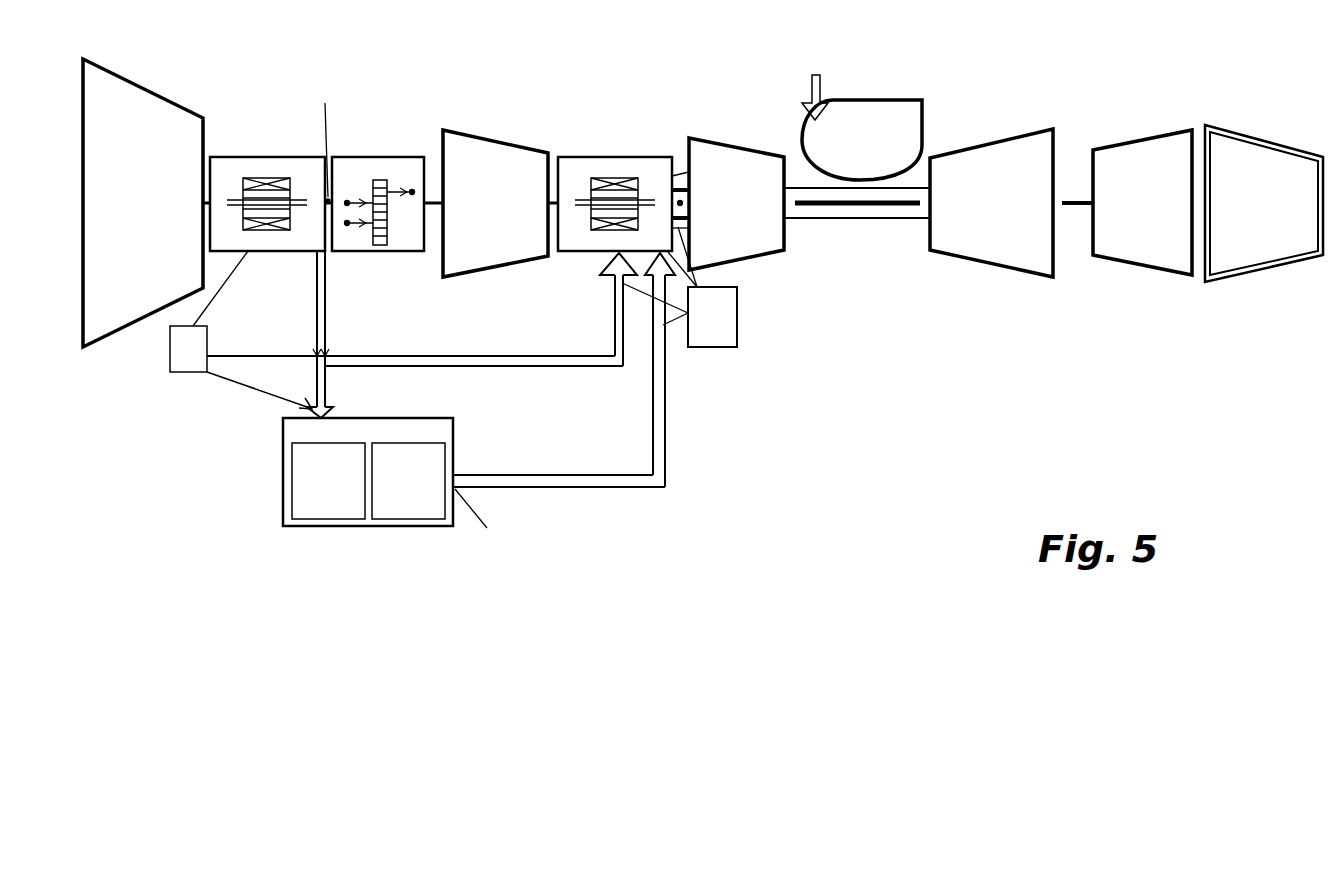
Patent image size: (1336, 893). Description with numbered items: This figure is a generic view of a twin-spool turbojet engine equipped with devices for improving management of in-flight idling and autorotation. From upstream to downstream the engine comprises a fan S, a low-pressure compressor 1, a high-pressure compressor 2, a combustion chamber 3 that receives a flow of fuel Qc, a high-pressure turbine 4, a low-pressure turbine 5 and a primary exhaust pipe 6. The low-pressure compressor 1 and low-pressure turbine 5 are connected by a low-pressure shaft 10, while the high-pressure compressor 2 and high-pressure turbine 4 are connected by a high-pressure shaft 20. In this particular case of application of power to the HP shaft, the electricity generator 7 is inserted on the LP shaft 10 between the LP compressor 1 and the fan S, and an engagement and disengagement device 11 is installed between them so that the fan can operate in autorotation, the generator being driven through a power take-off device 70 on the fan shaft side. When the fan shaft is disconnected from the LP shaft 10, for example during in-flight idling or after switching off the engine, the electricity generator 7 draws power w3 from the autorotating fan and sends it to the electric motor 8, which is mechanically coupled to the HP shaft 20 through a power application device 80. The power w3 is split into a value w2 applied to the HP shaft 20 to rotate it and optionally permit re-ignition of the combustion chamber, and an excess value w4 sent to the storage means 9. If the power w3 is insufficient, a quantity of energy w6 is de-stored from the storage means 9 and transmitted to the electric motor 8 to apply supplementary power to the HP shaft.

The fan S is at (132, 103).
The low-pressure compressor 1 is at (494, 155).
The high-pressure compressor 2 is at (727, 155).
The combustion chamber 3 is at (866, 108).
The high-pressure turbine 4 is at (997, 153).
The low-pressure turbine 5 is at (1143, 153).
The primary exhaust pipe 6 is at (1260, 160).
The electricity generator 7 is at (278, 157).
The electric motor 8 is at (610, 157).
The storage means 9 is at (283, 500).
The low-pressure shaft 10 is at (433, 207).
The engagement and disengagement device 11 is at (352, 157).
The high-pressure shaft 20 is at (850, 219).
The power take-off device 70 is at (339, 319).
The power application device 80 is at (679, 287).
The flow of fuel Qc is at (797, 91).
The power applied to the HP shaft w2 is at (422, 309).
The power drawn from the fan shaft w3 is at (298, 334).
The excess power w4 is at (259, 389).
The de-stored energy w6 is at (564, 370).